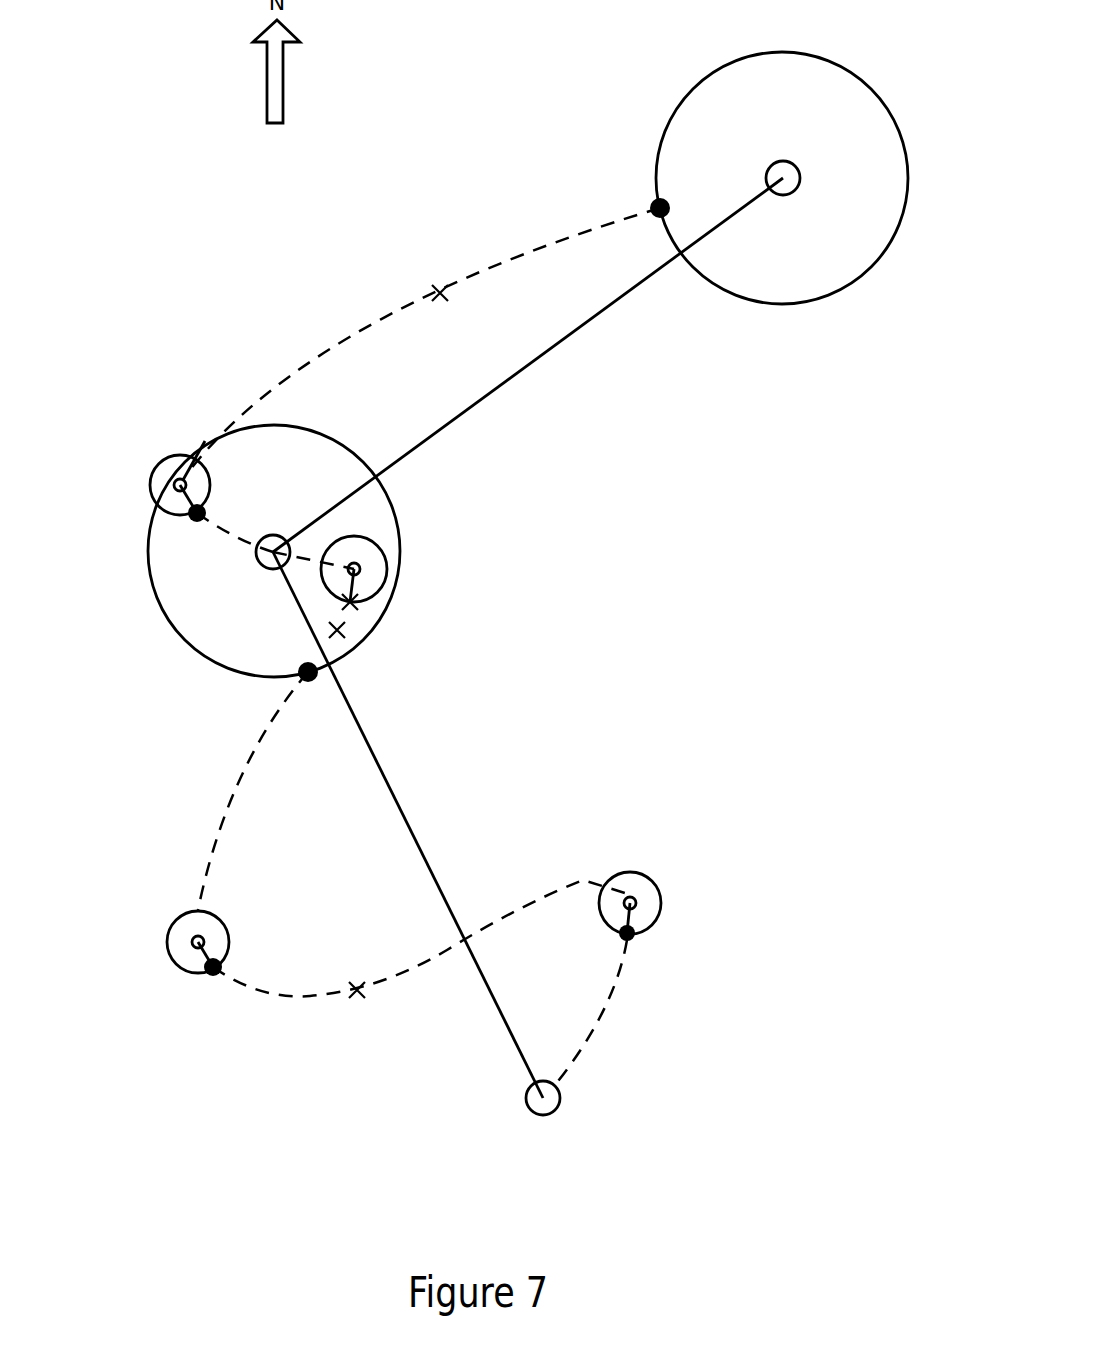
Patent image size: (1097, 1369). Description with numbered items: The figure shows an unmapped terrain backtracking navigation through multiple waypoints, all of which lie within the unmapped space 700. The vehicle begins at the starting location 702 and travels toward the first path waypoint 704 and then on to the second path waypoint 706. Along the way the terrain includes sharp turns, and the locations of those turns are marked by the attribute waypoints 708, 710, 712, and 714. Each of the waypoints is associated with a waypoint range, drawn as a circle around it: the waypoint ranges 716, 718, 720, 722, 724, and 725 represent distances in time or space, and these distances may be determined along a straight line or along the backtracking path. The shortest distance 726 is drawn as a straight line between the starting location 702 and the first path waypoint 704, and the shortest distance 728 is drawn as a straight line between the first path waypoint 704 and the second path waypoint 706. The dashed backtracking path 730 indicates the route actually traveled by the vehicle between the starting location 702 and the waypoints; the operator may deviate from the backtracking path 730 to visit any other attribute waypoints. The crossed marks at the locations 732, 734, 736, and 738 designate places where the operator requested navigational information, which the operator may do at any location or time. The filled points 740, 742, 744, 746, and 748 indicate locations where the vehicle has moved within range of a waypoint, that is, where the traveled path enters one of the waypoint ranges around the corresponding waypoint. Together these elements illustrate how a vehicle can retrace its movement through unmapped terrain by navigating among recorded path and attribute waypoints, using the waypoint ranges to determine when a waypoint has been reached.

The unmapped space 700 is at (737, 1143).
The starting location 702 is at (565, 1097).
The first path waypoint 704 is at (258, 558).
The second path waypoint 706 is at (800, 163).
The attribute waypoint 708 is at (638, 902).
The attribute waypoint 710 is at (190, 942).
The attribute waypoint 712 is at (363, 568).
The attribute waypoint 714 is at (172, 482).
The waypoint range 716 is at (622, 888).
The waypoint range 718 is at (170, 927).
The waypoint range 720 is at (198, 655).
The waypoint range 722 is at (175, 488).
The waypoint range 724 is at (387, 582).
The waypoint range 725 is at (863, 78).
The shortest distance 726 is at (410, 818).
The shortest distance 728 is at (613, 305).
The backtracking path 730 is at (552, 890).
The location where navigational information was requested 732 is at (363, 993).
The location where navigational information was requested 734 is at (345, 636).
The location where navigational information was requested 736 is at (353, 607).
The location where navigational information was requested 738 is at (435, 292).
The location within range of a waypoint 740 is at (635, 935).
The location within range of a waypoint 742 is at (223, 967).
The location within range of a waypoint 744 is at (317, 683).
The location within range of a waypoint 746 is at (206, 513).
The location within range of a waypoint 748 is at (647, 210).